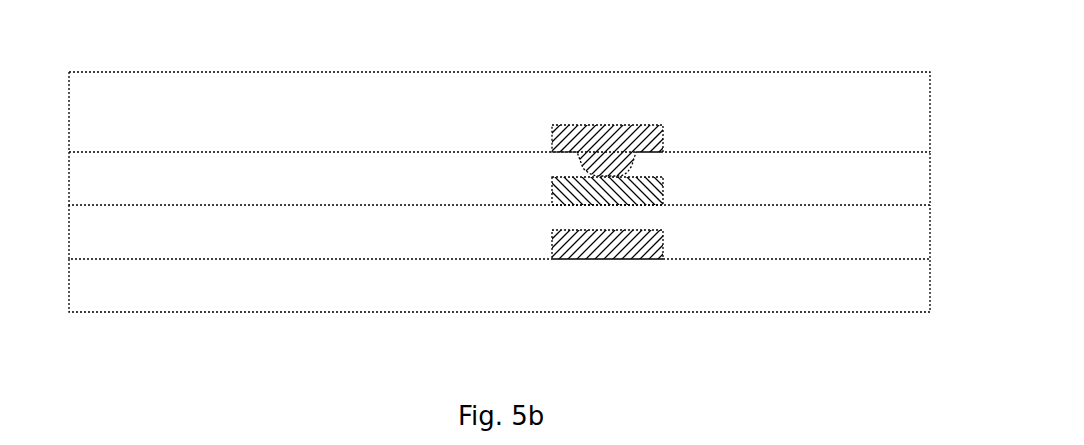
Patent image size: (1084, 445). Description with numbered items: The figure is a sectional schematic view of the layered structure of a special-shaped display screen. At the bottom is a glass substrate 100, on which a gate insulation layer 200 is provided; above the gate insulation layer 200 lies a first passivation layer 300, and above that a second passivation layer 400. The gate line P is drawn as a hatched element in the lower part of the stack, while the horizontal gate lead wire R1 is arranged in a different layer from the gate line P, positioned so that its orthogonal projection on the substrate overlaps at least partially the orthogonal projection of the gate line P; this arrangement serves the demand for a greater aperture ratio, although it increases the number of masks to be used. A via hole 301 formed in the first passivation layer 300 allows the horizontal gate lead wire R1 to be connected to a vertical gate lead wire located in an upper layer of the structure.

The glass substrate 100 is at (253, 282).
The gate insulation layer 200 is at (115, 230).
The first passivation layer 300 is at (302, 182).
The second passivation layer 400 is at (167, 138).
The via hole 301 is at (630, 170).
The horizontal gate lead wire R1 is at (643, 178).
The gate line P is at (622, 248).